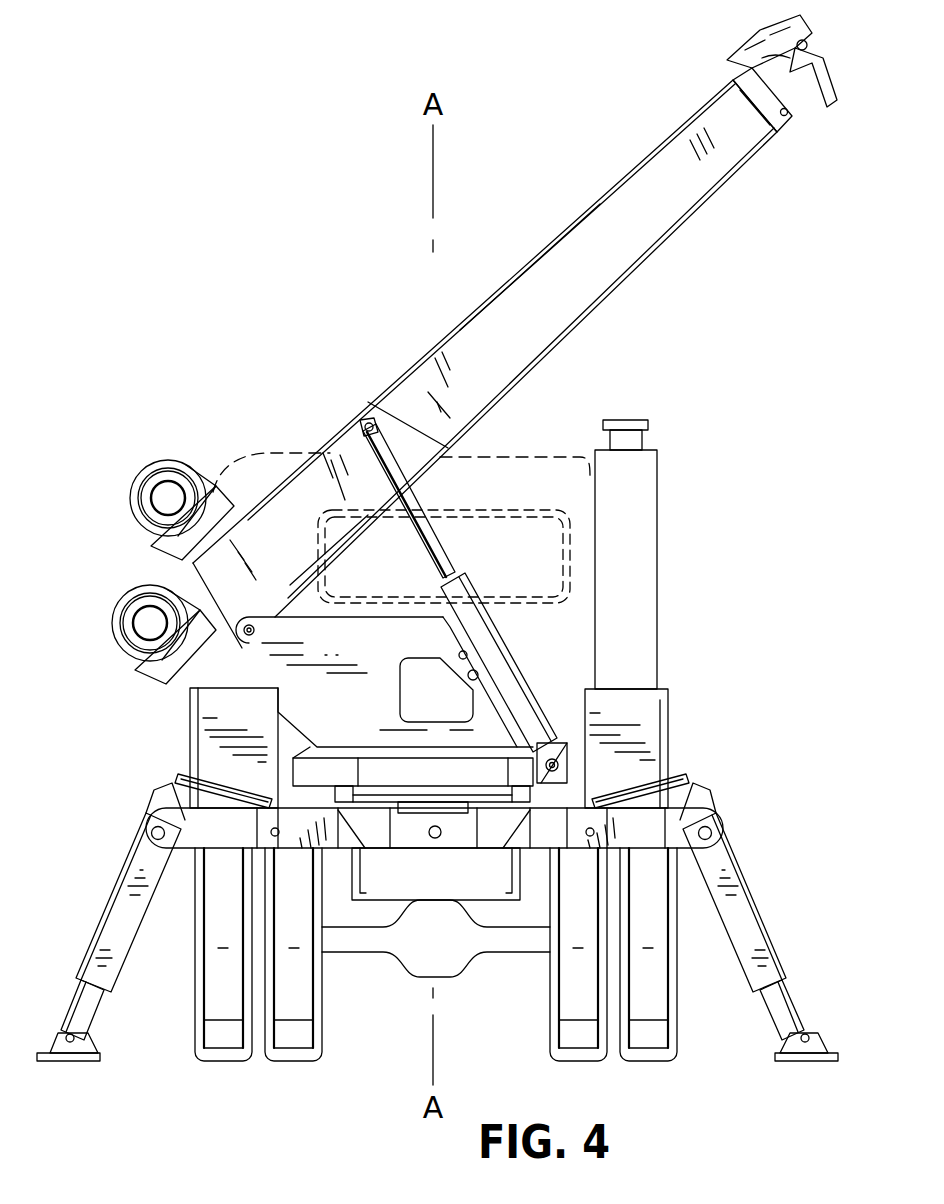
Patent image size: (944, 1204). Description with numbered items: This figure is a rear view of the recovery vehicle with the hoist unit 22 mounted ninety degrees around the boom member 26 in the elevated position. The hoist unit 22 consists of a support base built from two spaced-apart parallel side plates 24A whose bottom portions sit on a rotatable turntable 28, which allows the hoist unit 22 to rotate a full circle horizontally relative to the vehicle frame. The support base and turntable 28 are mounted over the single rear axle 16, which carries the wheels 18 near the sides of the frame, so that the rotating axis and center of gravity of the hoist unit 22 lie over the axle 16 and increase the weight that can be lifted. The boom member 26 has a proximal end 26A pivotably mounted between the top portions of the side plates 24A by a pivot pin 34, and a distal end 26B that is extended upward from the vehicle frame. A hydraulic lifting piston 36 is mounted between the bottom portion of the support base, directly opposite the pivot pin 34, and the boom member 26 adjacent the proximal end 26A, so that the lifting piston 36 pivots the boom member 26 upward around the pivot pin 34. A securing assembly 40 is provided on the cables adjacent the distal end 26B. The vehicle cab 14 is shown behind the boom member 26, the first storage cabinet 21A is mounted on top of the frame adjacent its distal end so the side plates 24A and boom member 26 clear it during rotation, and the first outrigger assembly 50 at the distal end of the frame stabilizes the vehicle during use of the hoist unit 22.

The vehicle cab 14 is at (546, 510).
The rear axle 16 is at (363, 937).
The wheels 18 is at (655, 1037).
The first storage cabinet 21A is at (262, 723).
The hoist unit 22 is at (576, 217).
The side plates 24A is at (302, 637).
The boom member 26 is at (607, 282).
The proximal end of the boom member 26A is at (330, 533).
The distal end of the boom member 26B is at (723, 150).
The turntable 28 is at (377, 790).
The pivot pin 34 is at (205, 643).
The hydraulic lifting piston 36 is at (498, 673).
The securing assembly 40 is at (788, 84).
The first outrigger assembly 50 is at (693, 800).